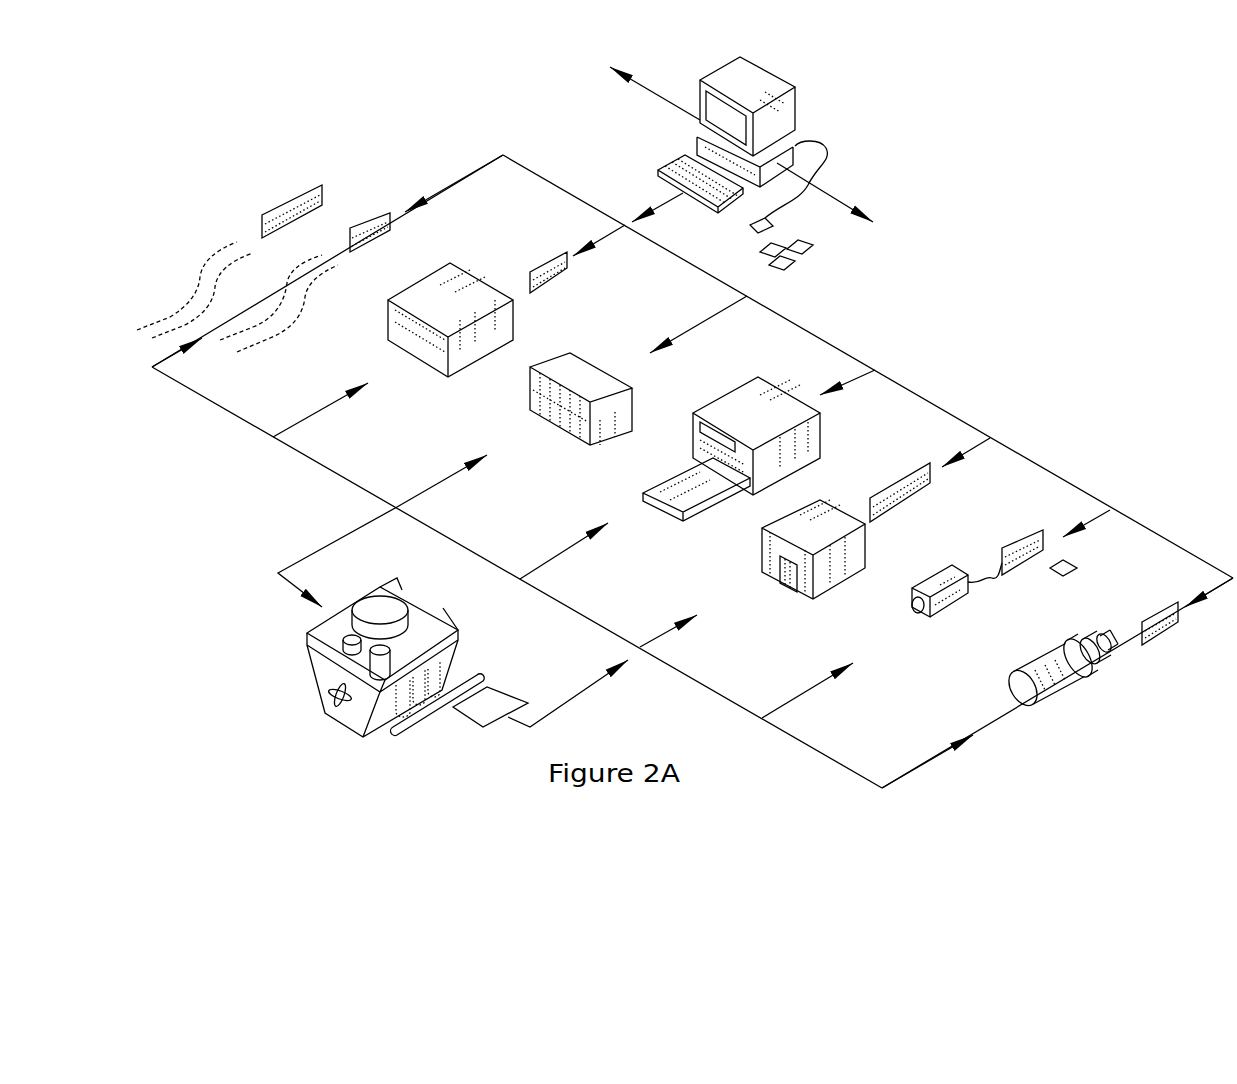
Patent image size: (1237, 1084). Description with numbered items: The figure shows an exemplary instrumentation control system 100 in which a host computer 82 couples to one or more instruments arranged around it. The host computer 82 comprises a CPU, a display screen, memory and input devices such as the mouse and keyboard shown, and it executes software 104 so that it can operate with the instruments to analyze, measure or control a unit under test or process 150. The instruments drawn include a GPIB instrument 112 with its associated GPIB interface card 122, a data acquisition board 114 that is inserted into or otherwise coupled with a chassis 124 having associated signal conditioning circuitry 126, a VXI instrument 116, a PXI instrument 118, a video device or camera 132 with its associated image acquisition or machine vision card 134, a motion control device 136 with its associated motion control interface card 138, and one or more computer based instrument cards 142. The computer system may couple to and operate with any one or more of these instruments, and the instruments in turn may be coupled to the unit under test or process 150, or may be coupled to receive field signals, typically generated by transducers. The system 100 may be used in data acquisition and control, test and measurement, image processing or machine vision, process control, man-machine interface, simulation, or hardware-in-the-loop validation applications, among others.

The instrumentation control system 100 is at (1008, 187).
The host computer 82 is at (762, 73).
The software 104 is at (790, 265).
The computer based instrument cards 142 is at (273, 210).
The GPIB instrument 112 is at (418, 293).
The GPIB interface card 122 is at (542, 265).
The PXI instrument 118 is at (587, 373).
The VXI instrument 116 is at (728, 410).
The data acquisition board 114 is at (920, 467).
The chassis 124 is at (772, 557).
The signal conditioning circuitry 126 is at (788, 577).
The image acquisition card 134 is at (1020, 542).
The video device or camera 132 is at (940, 610).
The motion control device 136 is at (1063, 690).
The motion control interface card 138 is at (1163, 637).
The unit under test or process 150 is at (320, 670).